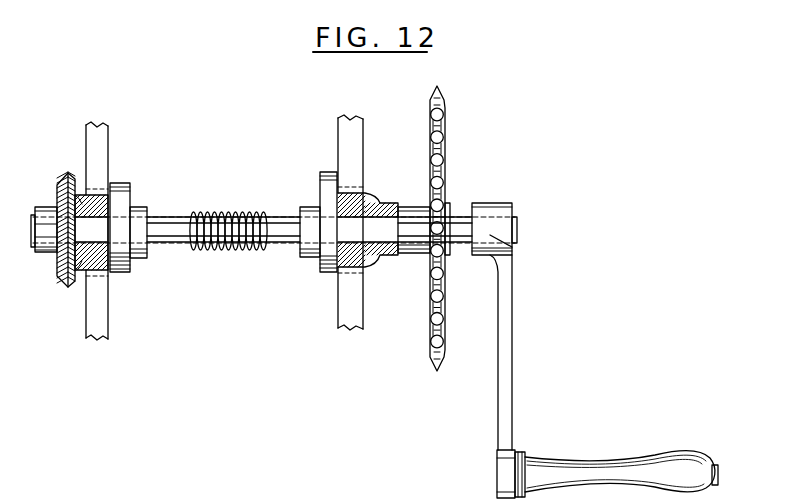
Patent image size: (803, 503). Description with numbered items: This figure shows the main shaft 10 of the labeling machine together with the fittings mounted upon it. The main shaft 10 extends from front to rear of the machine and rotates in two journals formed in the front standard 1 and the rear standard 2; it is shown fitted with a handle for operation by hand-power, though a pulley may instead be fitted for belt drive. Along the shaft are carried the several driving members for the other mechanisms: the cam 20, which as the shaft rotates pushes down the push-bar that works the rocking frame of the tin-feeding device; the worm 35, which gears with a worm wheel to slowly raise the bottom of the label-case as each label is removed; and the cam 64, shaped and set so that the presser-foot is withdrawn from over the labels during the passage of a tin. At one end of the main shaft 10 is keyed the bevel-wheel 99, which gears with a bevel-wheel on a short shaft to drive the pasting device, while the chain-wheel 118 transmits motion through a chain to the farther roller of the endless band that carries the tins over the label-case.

The standard 1 is at (350, 222).
The rear standard 2 is at (97, 231).
The main shaft 10 is at (167, 226).
The cam 20 is at (332, 203).
The worm 35 is at (227, 216).
The cam 64 is at (120, 197).
The bevel-wheel 99 is at (58, 198).
The chain-wheel 118 is at (436, 162).